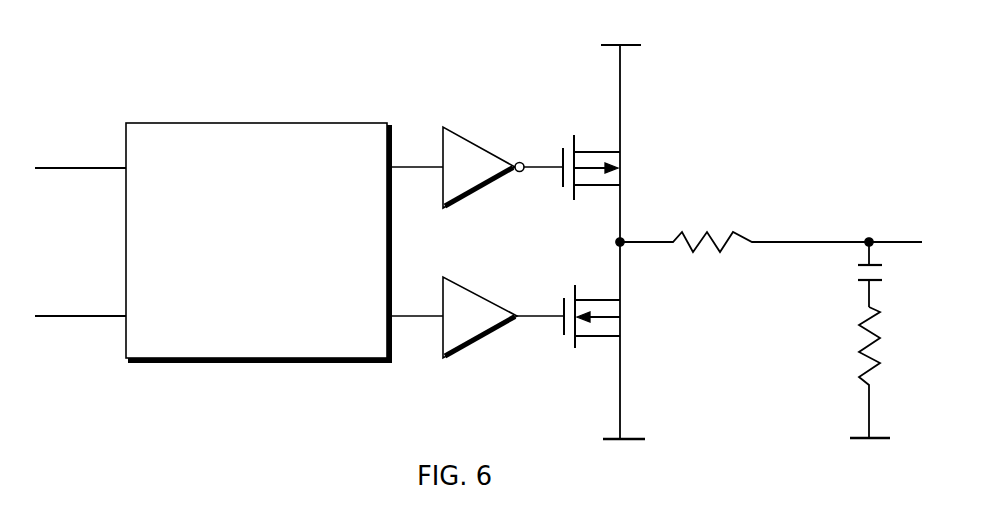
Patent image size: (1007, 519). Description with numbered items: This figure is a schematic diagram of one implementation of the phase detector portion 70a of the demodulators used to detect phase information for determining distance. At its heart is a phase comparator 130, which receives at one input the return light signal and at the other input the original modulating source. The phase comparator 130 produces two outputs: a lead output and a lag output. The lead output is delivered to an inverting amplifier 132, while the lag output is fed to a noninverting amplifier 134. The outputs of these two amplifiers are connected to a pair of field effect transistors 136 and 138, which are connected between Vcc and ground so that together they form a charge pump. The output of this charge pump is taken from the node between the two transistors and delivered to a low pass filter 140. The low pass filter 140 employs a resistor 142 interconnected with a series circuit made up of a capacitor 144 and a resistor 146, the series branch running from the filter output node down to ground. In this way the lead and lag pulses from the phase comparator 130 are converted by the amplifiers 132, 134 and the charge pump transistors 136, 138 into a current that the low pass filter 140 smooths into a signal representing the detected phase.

The phase detector portion 70a is at (753, 16).
The phase comparator 130 is at (306, 360).
The inverting amplifier 132 is at (471, 144).
The noninverting amplifier 134 is at (474, 292).
The field effect transistor 136 is at (623, 150).
The field effect transistor 138 is at (623, 324).
The low pass filter 140 is at (771, 284).
The resistor 142 is at (697, 248).
The capacitor 144 is at (862, 276).
The resistor 146 is at (862, 350).